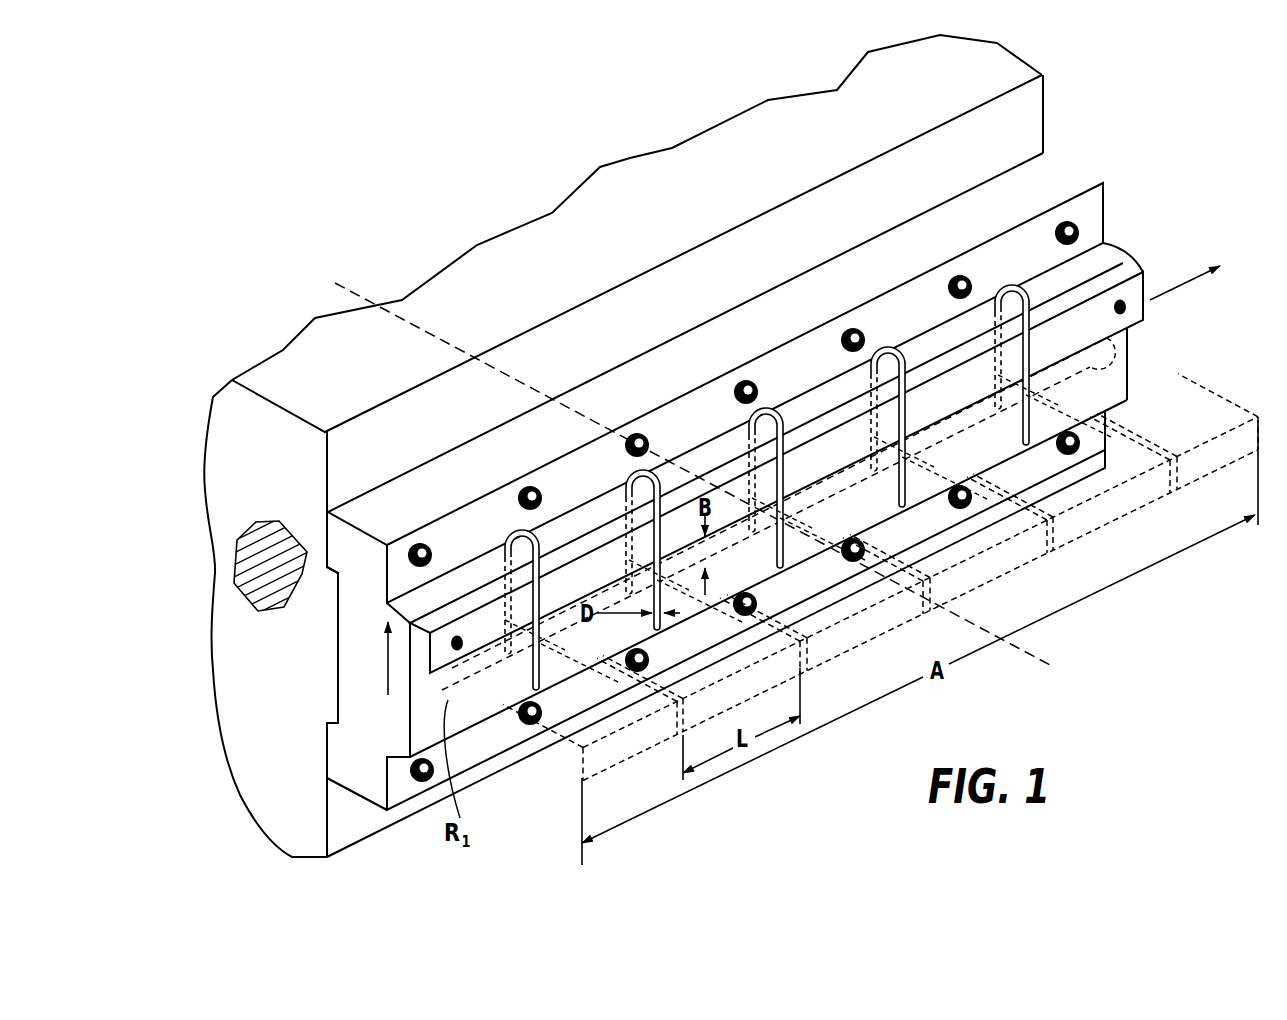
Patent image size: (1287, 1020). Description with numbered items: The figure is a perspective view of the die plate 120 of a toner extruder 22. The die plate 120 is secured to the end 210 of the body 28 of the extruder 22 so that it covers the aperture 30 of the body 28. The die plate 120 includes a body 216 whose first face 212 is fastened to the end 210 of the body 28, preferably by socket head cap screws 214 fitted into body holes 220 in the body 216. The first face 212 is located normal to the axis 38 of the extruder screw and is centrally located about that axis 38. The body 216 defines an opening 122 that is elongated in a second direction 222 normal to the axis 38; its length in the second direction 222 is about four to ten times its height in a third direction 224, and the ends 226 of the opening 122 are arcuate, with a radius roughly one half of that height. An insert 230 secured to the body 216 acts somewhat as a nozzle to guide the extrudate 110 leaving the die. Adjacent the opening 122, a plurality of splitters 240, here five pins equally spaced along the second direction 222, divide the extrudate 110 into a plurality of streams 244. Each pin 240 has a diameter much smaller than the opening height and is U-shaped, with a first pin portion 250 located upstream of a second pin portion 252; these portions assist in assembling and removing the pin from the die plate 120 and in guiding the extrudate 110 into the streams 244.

The extruder 22 is at (1076, 72).
The body of the extruder 28 is at (797, 105).
The aperture 30 is at (272, 613).
The axis 38 is at (460, 350).
The extrudate 110 is at (270, 578).
The die plate 120 is at (1112, 168).
The opening 122 is at (478, 678).
The end of the body 210 is at (335, 838).
The first face 212 is at (327, 747).
The socket head cap screws 214 is at (420, 543).
The body of the die plate 216 is at (383, 778).
The body holes 220 is at (406, 548).
The second direction 222 is at (1185, 285).
The third direction 224 is at (386, 657).
The ends of the opening 226 is at (440, 693).
The insert 230 is at (1148, 292).
The splitter 240 is at (503, 527).
The streams of extrudate 244 is at (875, 625).
The first pin portion 250 is at (500, 655).
The second pin portion 252 is at (539, 645).